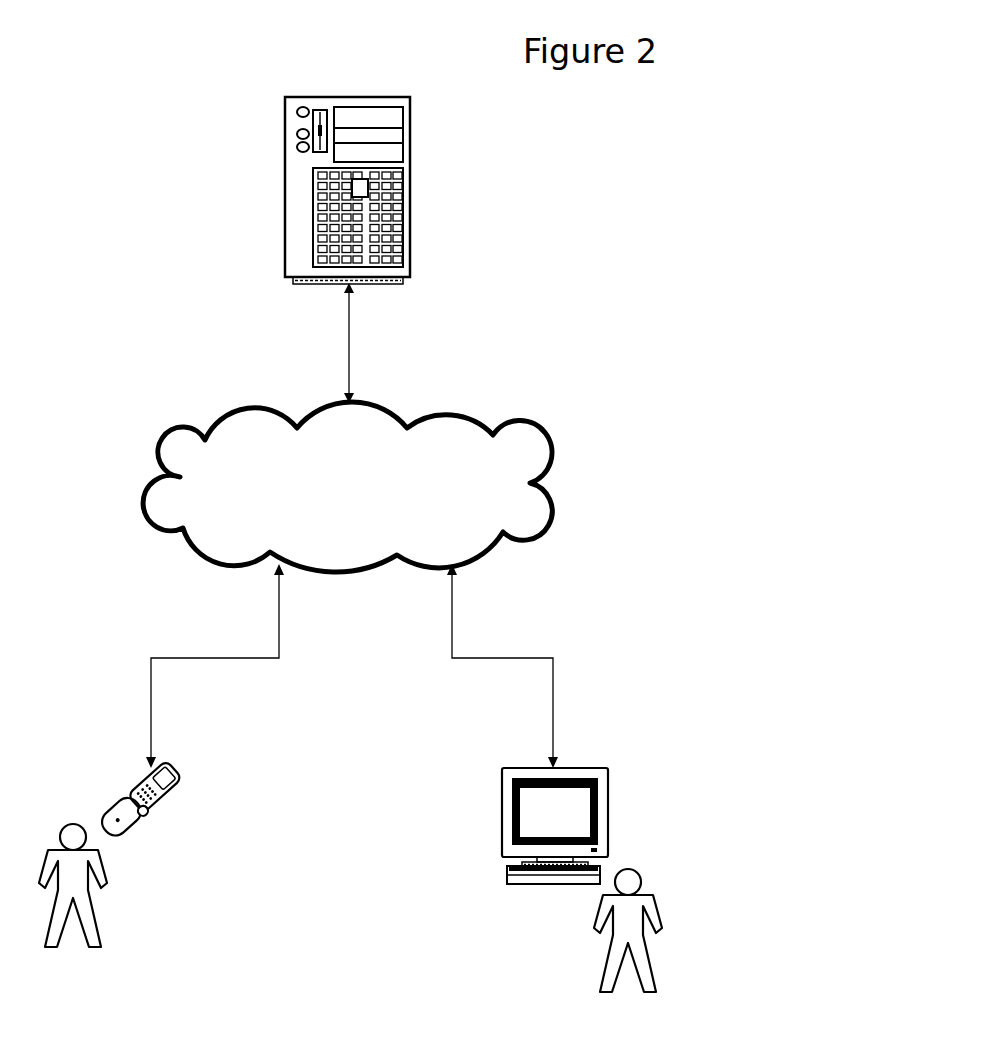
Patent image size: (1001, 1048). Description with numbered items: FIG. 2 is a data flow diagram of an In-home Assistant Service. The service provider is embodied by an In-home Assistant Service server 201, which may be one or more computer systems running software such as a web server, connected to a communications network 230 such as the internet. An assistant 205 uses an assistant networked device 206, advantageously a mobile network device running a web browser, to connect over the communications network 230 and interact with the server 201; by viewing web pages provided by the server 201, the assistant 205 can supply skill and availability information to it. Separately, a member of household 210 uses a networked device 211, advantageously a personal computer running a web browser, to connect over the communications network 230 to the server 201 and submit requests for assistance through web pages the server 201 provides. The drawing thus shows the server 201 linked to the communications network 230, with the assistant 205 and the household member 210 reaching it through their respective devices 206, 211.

The In-home Assistant Service server 201 is at (349, 198).
The communications network 230 is at (347, 487).
The assistant networked device 206 is at (140, 810).
The assistant 205 is at (84, 895).
The networked device 211 is at (555, 839).
The member of household 210 is at (617, 940).